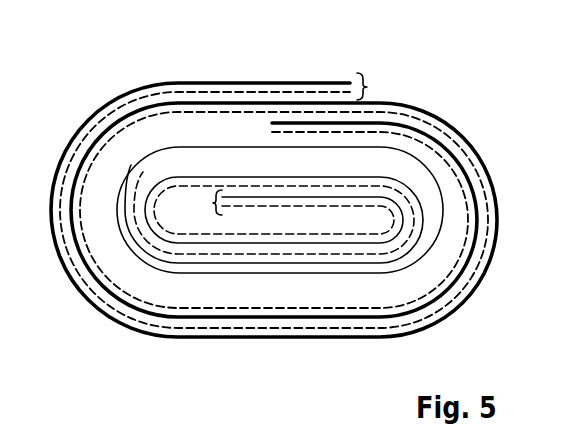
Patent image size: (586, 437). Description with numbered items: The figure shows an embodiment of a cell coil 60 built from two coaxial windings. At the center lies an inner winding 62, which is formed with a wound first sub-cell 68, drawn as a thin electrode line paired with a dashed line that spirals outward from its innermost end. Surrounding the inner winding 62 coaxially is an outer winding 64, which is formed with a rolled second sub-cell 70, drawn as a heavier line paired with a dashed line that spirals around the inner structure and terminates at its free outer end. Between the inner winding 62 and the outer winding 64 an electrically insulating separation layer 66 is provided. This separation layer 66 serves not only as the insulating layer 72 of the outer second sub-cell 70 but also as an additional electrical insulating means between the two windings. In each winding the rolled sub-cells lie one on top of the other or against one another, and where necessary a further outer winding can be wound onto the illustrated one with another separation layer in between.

The cell coil 60 is at (282, 186).
The inner winding 62 is at (503, 172).
The outer winding 64 is at (53, 337).
The separation layer 66 is at (167, 147).
The first sub-cell 68 is at (40, 206).
The second sub-cell 70 is at (402, 88).
The insulating layer 72 is at (205, 110).